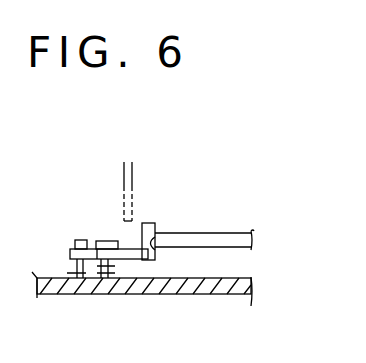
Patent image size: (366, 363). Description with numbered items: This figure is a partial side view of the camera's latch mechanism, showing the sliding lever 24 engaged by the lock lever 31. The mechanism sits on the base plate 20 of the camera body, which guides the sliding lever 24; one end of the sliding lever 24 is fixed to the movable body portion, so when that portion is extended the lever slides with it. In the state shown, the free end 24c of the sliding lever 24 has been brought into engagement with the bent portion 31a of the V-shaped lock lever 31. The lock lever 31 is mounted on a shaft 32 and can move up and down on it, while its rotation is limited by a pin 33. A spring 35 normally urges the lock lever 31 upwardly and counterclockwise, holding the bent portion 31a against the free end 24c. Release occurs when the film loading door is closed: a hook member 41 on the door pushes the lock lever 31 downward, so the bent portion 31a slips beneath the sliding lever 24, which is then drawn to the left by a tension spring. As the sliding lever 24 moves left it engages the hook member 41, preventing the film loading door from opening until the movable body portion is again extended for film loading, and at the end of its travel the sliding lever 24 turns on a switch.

The base plate 20 is at (73, 289).
The lock lever 31 is at (137, 259).
The bent portion 31a is at (149, 222).
The shaft 32 is at (108, 241).
The pin 33 is at (75, 241).
The spring 35 is at (102, 273).
The sliding lever 24 is at (226, 240).
The free end 24c is at (153, 244).
The hook member 41 is at (132, 183).